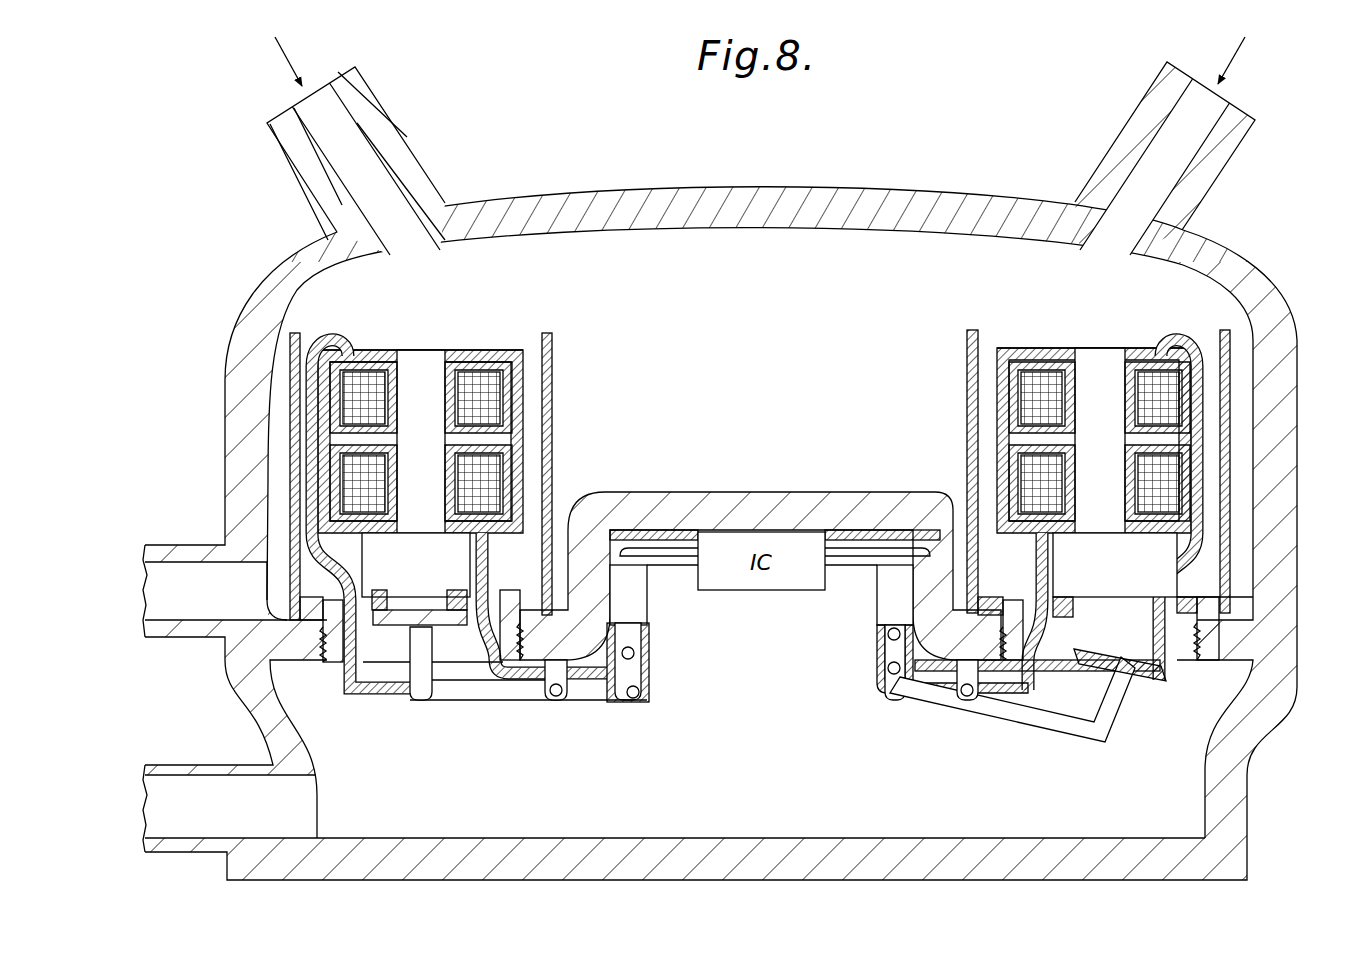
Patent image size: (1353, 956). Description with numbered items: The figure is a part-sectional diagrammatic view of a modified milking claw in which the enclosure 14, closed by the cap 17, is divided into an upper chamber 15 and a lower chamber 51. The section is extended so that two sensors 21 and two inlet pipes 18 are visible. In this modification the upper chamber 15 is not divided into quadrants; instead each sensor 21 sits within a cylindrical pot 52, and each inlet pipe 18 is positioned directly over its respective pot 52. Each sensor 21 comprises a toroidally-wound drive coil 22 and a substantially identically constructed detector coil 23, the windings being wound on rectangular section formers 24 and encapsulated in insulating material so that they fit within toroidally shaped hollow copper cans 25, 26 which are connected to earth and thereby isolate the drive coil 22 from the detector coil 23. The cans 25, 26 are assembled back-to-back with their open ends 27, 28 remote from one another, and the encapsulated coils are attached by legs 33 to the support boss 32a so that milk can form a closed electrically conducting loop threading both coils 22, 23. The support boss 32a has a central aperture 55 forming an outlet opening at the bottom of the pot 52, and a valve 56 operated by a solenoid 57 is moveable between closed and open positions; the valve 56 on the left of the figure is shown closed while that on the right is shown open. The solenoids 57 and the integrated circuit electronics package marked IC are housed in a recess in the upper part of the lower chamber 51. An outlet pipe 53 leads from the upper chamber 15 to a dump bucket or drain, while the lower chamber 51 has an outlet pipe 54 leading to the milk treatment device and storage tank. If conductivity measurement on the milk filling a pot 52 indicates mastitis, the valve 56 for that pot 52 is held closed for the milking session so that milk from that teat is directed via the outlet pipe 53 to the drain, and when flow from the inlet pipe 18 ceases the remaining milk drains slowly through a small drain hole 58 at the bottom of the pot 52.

The enclosure 14 is at (668, 182).
The upper chamber 15 is at (522, 309).
The cap 17 is at (270, 267).
The inlet pipe 18 is at (397, 152).
The sensor 21 is at (300, 432).
The drive coil 22 is at (337, 493).
The detector coil 23 is at (338, 405).
The former 24 is at (368, 380).
The copper can 25 is at (330, 372).
The copper can 26 is at (330, 473).
The open end 27 is at (481, 355).
The open end 28 is at (330, 556).
The support boss 32a is at (335, 653).
The leg 33 is at (330, 578).
The lower chamber 51 is at (495, 795).
The cylindrical pot 52 is at (290, 338).
The outlet pipe 53 is at (162, 545).
The outlet pipe 54 is at (190, 766).
The central aperture 55 is at (403, 600).
The valve 56 is at (440, 600).
The solenoid 57 is at (640, 613).
The drain hole 58 is at (558, 582).